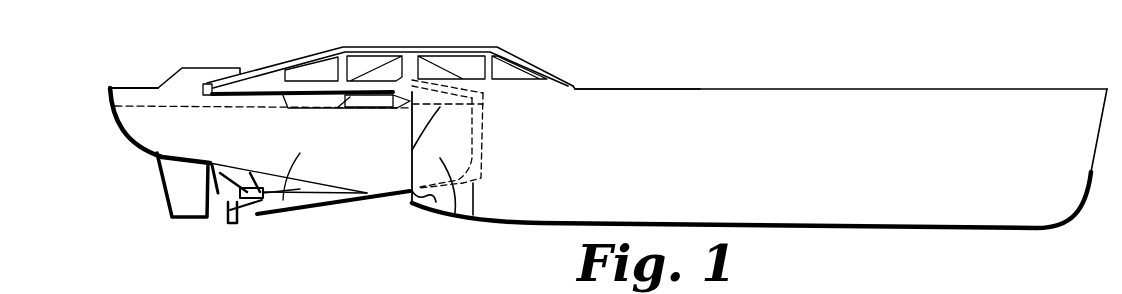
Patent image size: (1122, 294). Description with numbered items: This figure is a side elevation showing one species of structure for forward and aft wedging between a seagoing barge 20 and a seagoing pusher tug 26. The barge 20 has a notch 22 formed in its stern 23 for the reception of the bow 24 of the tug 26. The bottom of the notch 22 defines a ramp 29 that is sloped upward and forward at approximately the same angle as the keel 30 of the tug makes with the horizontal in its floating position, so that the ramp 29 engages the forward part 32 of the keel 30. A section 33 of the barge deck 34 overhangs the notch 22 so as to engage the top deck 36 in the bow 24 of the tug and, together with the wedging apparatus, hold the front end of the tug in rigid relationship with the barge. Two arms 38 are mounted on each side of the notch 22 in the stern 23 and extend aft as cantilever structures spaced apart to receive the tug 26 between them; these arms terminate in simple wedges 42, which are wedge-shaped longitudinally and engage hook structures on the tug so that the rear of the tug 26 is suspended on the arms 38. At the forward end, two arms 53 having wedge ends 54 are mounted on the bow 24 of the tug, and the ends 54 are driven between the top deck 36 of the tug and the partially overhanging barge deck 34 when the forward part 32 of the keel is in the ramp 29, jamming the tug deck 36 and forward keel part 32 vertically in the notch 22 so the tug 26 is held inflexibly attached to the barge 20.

The seagoing barge 20 is at (920, 102).
The notch 22 is at (486, 156).
The stern 23 is at (398, 201).
The bow 24 is at (440, 212).
The seagoing pusher tug 26 is at (282, 207).
The ramp 29 is at (473, 215).
The keel 30 is at (331, 205).
The forward part of the keel 32 is at (432, 205).
The section of the barge deck 33 is at (457, 90).
The barge deck 34 is at (677, 90).
The top deck 36 is at (409, 149).
The arms 38 is at (357, 47).
The simple wedges 42 is at (207, 79).
The arms 53 is at (389, 110).
The wedge ends 54 is at (462, 104).